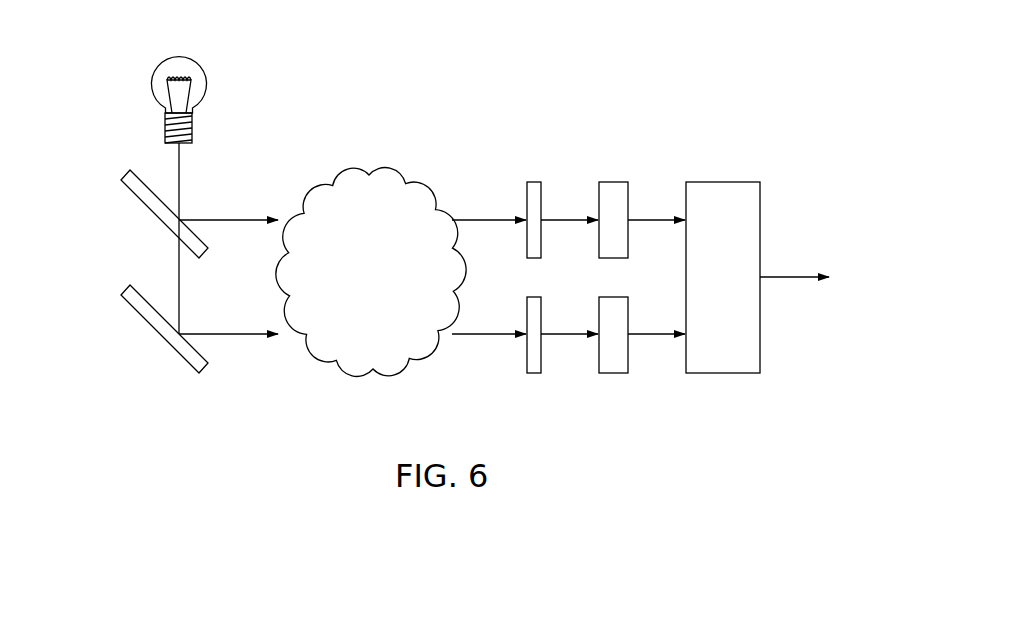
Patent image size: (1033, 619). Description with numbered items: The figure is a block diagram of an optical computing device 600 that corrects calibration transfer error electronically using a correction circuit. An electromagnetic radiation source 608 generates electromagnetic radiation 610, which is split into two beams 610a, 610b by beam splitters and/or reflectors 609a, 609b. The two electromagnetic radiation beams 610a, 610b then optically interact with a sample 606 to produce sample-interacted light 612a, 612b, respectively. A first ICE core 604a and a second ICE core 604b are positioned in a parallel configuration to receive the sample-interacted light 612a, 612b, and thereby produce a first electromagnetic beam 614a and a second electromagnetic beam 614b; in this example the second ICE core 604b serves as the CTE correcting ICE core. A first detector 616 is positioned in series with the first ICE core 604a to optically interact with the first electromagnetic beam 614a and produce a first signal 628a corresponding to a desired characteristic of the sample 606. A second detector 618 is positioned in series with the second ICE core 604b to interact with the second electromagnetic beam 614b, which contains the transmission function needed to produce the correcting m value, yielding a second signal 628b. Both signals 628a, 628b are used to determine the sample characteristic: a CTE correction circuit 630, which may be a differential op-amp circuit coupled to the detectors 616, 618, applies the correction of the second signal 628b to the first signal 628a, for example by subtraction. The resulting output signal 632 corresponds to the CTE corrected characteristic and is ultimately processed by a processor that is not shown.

The optical computing device 600 is at (437, 52).
The electromagnetic radiation source 608 is at (178, 56).
The electromagnetic radiation 610 is at (178, 158).
The beam splitter and/or reflector 609a is at (147, 210).
The beam splitter and/or reflector 609b is at (147, 325).
The electromagnetic radiation beam 610a is at (198, 218).
The electromagnetic radiation beam 610b is at (198, 332).
The sample 606 is at (393, 283).
The sample-interacted light 612a is at (488, 217).
The sample-interacted light 612b is at (488, 337).
The first ICE core 604a is at (530, 181).
The second ICE core 604b is at (533, 374).
The first electromagnetic beam 614a is at (553, 217).
The second electromagnetic beam 614b is at (566, 332).
The first detector 616 is at (608, 181).
The second detector 618 is at (612, 374).
The first signal 628a is at (648, 218).
The second signal 628b is at (648, 336).
The CTE correction circuit 630 is at (747, 292).
The output signal 632 is at (770, 275).